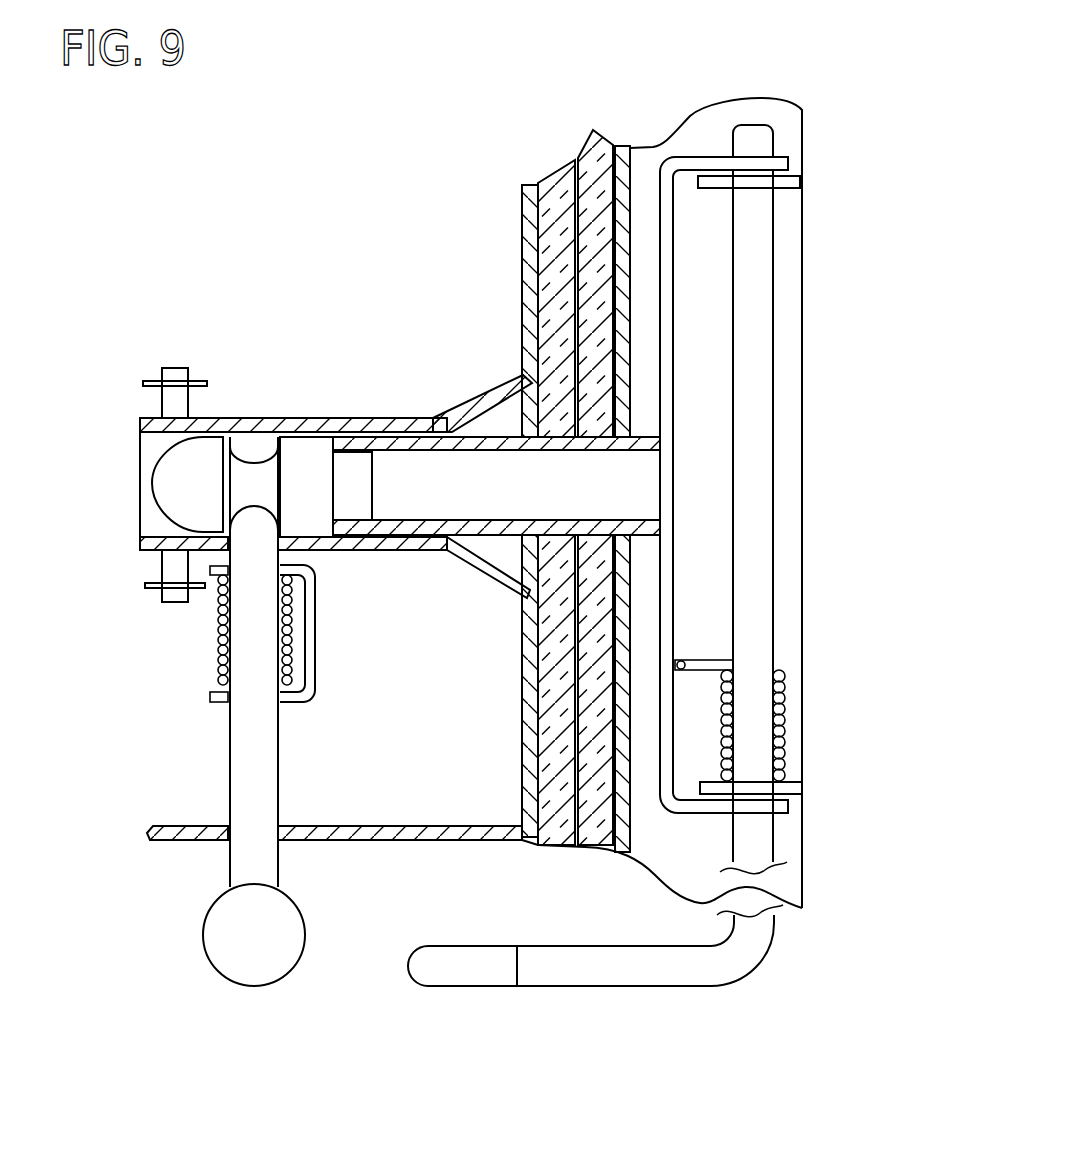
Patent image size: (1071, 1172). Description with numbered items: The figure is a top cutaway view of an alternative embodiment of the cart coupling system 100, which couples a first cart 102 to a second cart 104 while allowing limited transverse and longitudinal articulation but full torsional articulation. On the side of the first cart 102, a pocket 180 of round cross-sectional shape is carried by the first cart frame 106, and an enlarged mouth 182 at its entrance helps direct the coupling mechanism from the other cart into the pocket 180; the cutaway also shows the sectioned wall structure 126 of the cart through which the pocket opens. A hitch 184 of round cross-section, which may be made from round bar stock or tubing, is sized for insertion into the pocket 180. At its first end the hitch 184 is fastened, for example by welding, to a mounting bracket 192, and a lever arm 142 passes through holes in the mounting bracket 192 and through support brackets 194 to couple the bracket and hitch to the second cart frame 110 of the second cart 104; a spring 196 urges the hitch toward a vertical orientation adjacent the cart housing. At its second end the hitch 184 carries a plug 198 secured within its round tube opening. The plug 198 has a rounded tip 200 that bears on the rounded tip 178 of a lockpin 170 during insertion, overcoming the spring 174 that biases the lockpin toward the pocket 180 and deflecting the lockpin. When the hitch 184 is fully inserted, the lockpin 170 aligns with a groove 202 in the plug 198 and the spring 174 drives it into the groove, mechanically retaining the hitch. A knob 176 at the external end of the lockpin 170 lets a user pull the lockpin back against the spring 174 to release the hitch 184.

The system 100 is at (313, 222).
The first cart 102 is at (153, 773).
The second cart 104 is at (731, 57).
The first cart frame 106 is at (195, 838).
The second cart frame 110 is at (688, 118).
The wall panels 126 is at (592, 130).
The lever arm 142 is at (563, 985).
The lockpin 170 is at (280, 778).
The spring 174 is at (218, 663).
The knob 176 is at (280, 980).
The rounded tip 178 is at (253, 507).
The pocket 180 is at (152, 453).
The enlarged mouth 182 is at (508, 417).
The hitch 184 is at (393, 505).
The mounting bracket 192 is at (677, 587).
The support brackets 194 is at (792, 190).
The spring 196 is at (783, 702).
The plug 198 is at (316, 517).
The rounded tip 200 is at (157, 508).
The groove 202 is at (268, 453).